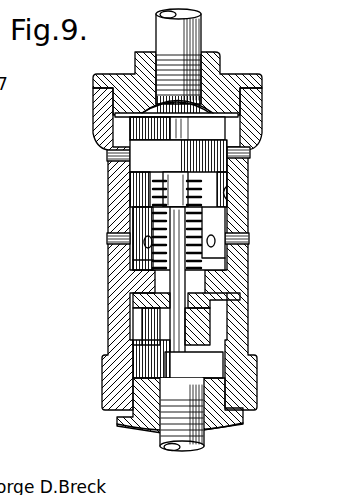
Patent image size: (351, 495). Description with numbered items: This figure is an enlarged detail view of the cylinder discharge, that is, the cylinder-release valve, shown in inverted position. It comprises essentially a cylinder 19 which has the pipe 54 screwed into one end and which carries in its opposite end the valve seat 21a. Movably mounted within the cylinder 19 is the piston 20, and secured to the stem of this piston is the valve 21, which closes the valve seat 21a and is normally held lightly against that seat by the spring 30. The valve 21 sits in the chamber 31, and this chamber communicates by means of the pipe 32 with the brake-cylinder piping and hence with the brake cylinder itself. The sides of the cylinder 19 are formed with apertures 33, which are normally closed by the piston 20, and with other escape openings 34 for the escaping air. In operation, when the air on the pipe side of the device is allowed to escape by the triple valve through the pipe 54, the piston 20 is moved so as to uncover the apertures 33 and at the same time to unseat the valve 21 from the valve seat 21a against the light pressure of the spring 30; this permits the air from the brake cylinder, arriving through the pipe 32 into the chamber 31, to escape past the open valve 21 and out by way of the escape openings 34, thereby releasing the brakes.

The pipe 54 is at (200, 25).
The cylinder 19 is at (247, 192).
The apertures 33 is at (250, 153).
The escape openings 34 is at (250, 238).
The piston 20 is at (145, 156).
The spring 30 is at (157, 215).
The valve seat 21a is at (240, 302).
The valve 21 is at (198, 335).
The chamber 31 is at (225, 342).
The pipe 32 is at (207, 437).